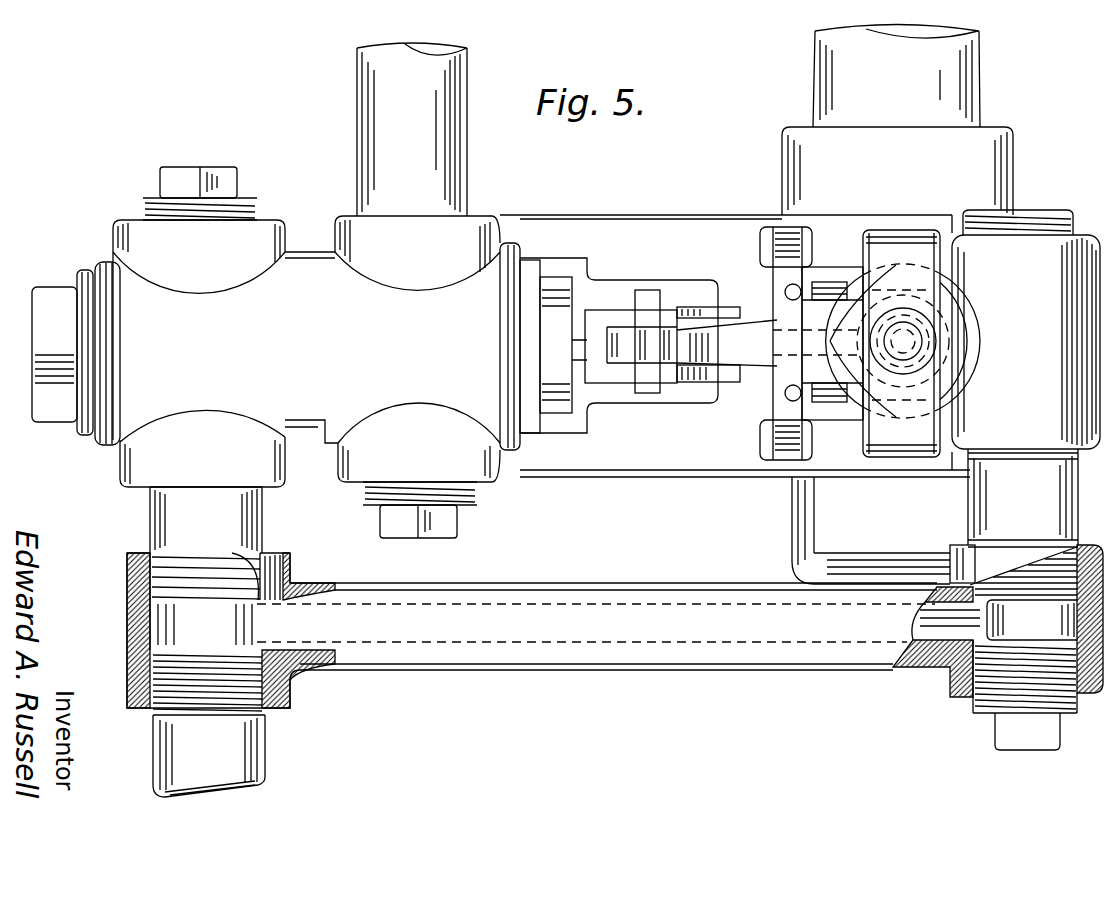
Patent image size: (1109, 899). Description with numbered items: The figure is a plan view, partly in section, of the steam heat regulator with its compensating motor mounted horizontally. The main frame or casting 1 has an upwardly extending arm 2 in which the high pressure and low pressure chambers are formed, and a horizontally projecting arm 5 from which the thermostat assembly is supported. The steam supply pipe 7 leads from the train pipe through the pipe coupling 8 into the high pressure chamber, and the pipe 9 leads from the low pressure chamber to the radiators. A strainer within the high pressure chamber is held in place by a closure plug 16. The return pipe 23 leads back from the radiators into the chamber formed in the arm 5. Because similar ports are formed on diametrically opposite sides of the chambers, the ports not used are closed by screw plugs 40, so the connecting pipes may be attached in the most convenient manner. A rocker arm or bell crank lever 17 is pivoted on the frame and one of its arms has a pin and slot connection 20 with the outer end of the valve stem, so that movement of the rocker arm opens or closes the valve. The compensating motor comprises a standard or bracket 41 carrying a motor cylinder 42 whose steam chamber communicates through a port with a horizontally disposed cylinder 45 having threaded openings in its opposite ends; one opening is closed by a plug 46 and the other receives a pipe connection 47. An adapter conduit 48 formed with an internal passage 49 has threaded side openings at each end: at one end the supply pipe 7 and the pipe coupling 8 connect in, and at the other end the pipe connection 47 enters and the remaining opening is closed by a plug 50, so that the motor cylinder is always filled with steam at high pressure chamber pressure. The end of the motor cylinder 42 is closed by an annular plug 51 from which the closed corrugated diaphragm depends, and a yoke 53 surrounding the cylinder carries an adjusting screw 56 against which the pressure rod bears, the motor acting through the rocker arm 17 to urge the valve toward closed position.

The main frame or casting 1 is at (581, 215).
The upwardly extending arm 2 is at (322, 455).
The horizontally projecting arm 5 is at (820, 479).
The steam supply pipe 7 is at (153, 756).
The pipe coupling 8 is at (157, 528).
The pipe 9 is at (358, 143).
The closure plug 16 is at (36, 302).
The rocker arm or bell crank lever 17 is at (740, 330).
The pin and slot connection 20 is at (636, 354).
The return pipe 23 is at (815, 105).
The screw plugs 40 is at (245, 200).
The standard or bracket 41 is at (775, 275).
The motor cylinder 42 is at (967, 310).
The horizontally disposed cylinder 45 is at (1050, 233).
The plug 46 is at (1048, 213).
The pipe connection 47 is at (968, 512).
The adapter conduit 48 is at (837, 667).
The internal passage 49 is at (904, 660).
The plug 50 is at (1005, 710).
The annular plug 51 is at (962, 342).
The yoke 53 is at (893, 232).
The adjusting screw 56 is at (907, 313).